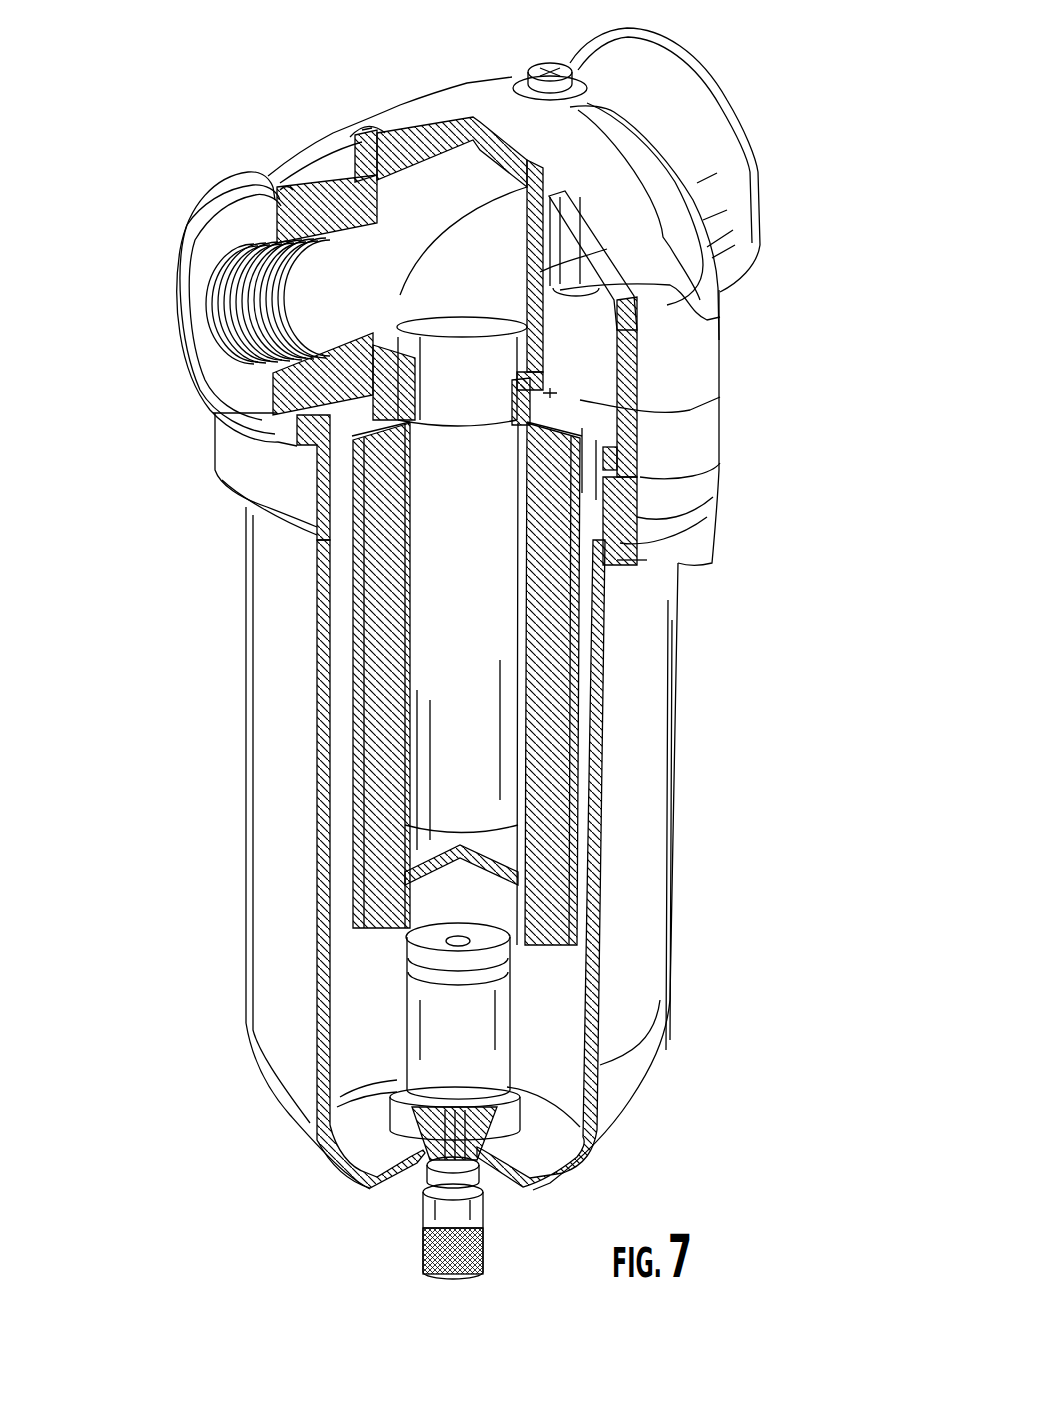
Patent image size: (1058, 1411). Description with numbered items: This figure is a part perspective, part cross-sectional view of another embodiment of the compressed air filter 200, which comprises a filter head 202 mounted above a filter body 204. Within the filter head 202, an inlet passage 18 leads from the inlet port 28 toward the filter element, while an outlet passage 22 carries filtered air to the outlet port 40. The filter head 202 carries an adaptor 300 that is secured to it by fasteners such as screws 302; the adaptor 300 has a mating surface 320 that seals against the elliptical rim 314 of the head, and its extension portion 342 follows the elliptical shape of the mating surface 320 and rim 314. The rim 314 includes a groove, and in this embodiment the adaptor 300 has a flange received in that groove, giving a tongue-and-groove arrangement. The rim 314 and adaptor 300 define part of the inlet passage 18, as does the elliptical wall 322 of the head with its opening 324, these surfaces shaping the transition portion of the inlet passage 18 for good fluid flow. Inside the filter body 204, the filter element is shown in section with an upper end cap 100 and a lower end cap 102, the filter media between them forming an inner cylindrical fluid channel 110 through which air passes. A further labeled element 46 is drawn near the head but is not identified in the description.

The inlet passage 18 is at (267, 345).
The outlet passage 22 is at (594, 367).
The inlet port 28 is at (146, 200).
The outlet port 40 is at (814, 63).
The latch 46 is at (600, 473).
The upper end cap 100 is at (650, 482).
The lower end cap 102 is at (337, 913).
The inner cylindrical fluid channel 110 is at (451, 689).
The compressed air filter 200 is at (170, 645).
The filter head 202 is at (770, 438).
The filter body 204 is at (709, 972).
The adaptor 300 is at (557, 394).
The screws 302 is at (600, 292).
The rim 314 is at (440, 200).
The mating surface 320 is at (527, 292).
The wall 322 is at (450, 178).
The opening 324 is at (356, 269).
The extension portion 342 is at (320, 411).